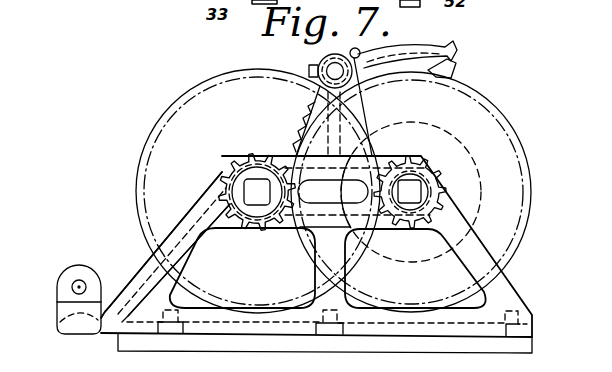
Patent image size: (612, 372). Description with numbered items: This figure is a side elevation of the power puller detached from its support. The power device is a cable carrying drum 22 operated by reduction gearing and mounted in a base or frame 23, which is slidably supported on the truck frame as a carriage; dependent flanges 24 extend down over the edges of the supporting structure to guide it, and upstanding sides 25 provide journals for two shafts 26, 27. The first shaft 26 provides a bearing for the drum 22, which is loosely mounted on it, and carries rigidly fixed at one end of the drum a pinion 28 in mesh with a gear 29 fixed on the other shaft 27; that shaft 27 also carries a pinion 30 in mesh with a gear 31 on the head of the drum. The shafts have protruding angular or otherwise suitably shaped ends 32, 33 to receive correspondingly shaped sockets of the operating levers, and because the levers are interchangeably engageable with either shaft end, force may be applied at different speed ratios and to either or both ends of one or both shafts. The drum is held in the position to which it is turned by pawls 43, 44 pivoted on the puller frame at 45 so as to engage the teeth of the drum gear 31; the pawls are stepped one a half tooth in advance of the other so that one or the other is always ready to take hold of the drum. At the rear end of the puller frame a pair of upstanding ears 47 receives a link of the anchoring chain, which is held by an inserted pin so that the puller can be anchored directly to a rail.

The cable carrying drum 22 is at (473, 168).
The base or frame 23 is at (497, 302).
The dependent flanges 24 is at (524, 350).
The upstanding sides 25 is at (200, 217).
The shaft 26 is at (421, 181).
The shaft 27 is at (253, 195).
The pinion 28 is at (455, 197).
The gear 29 is at (163, 112).
The pinion 30 is at (236, 165).
The gear 31 is at (530, 200).
The shaft end 32 is at (410, 204).
The shaft end 33 is at (251, 204).
The pawl 43 is at (455, 70).
The pawl 44 is at (447, 47).
The pivot 45 is at (325, 60).
The upstanding ears 47 is at (78, 262).